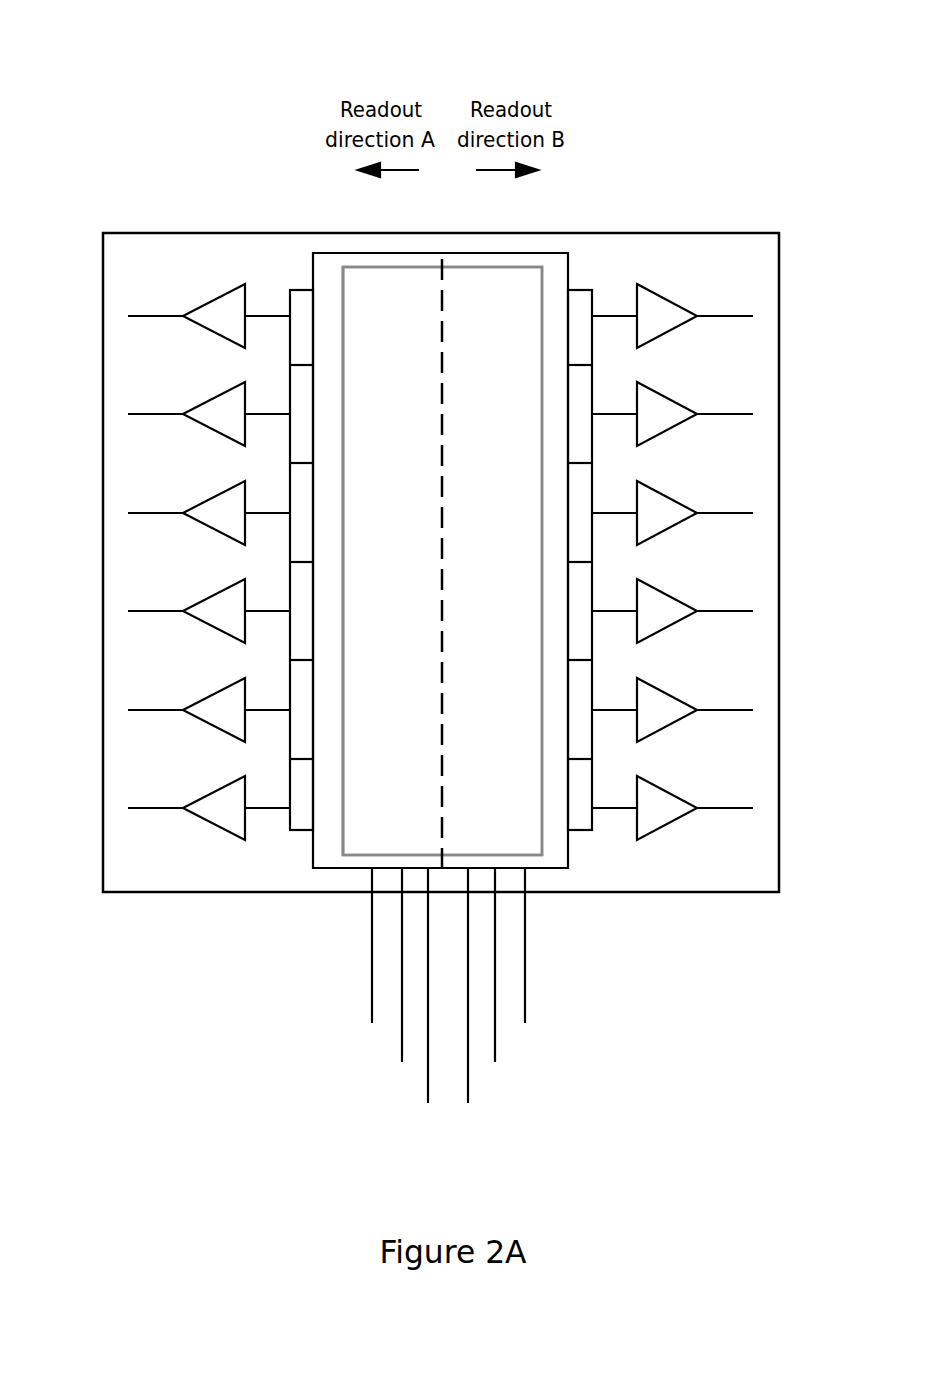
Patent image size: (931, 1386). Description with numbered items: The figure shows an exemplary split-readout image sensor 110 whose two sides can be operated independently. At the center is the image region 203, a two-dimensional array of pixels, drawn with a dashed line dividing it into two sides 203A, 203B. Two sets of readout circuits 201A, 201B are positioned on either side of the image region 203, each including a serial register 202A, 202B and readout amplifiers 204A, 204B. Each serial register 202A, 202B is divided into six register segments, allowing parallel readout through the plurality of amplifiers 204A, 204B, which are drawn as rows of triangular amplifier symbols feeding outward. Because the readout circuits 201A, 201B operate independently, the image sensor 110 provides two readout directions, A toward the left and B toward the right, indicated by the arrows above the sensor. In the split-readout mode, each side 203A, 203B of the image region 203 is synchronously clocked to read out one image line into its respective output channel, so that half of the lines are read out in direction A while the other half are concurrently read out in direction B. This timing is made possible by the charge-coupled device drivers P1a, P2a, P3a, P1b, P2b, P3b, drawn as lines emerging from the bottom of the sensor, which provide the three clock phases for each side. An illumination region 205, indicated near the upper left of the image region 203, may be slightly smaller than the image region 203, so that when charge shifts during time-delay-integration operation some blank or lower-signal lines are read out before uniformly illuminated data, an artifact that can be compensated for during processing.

The split-readout image sensor 110 is at (427, 32).
The readout circuit 201A is at (207, 485).
The readout circuit 201B is at (669, 487).
The serial register 202A is at (298, 830).
The serial register 202B is at (587, 830).
The image region 203 is at (340, 868).
The side of image region 203A is at (418, 557).
The side of image region 203B is at (523, 557).
The readout amplifiers 204A is at (205, 862).
The readout amplifiers 204B is at (681, 862).
The illumination region 205 is at (343, 303).
The CCD driver P1a is at (372, 1023).
The CCD driver P2a is at (402, 1062).
The CCD driver P3a is at (428, 1103).
The CCD driver P1b is at (468, 1103).
The CCD driver P2b is at (495, 1062).
The CCD driver P3b is at (525, 1023).